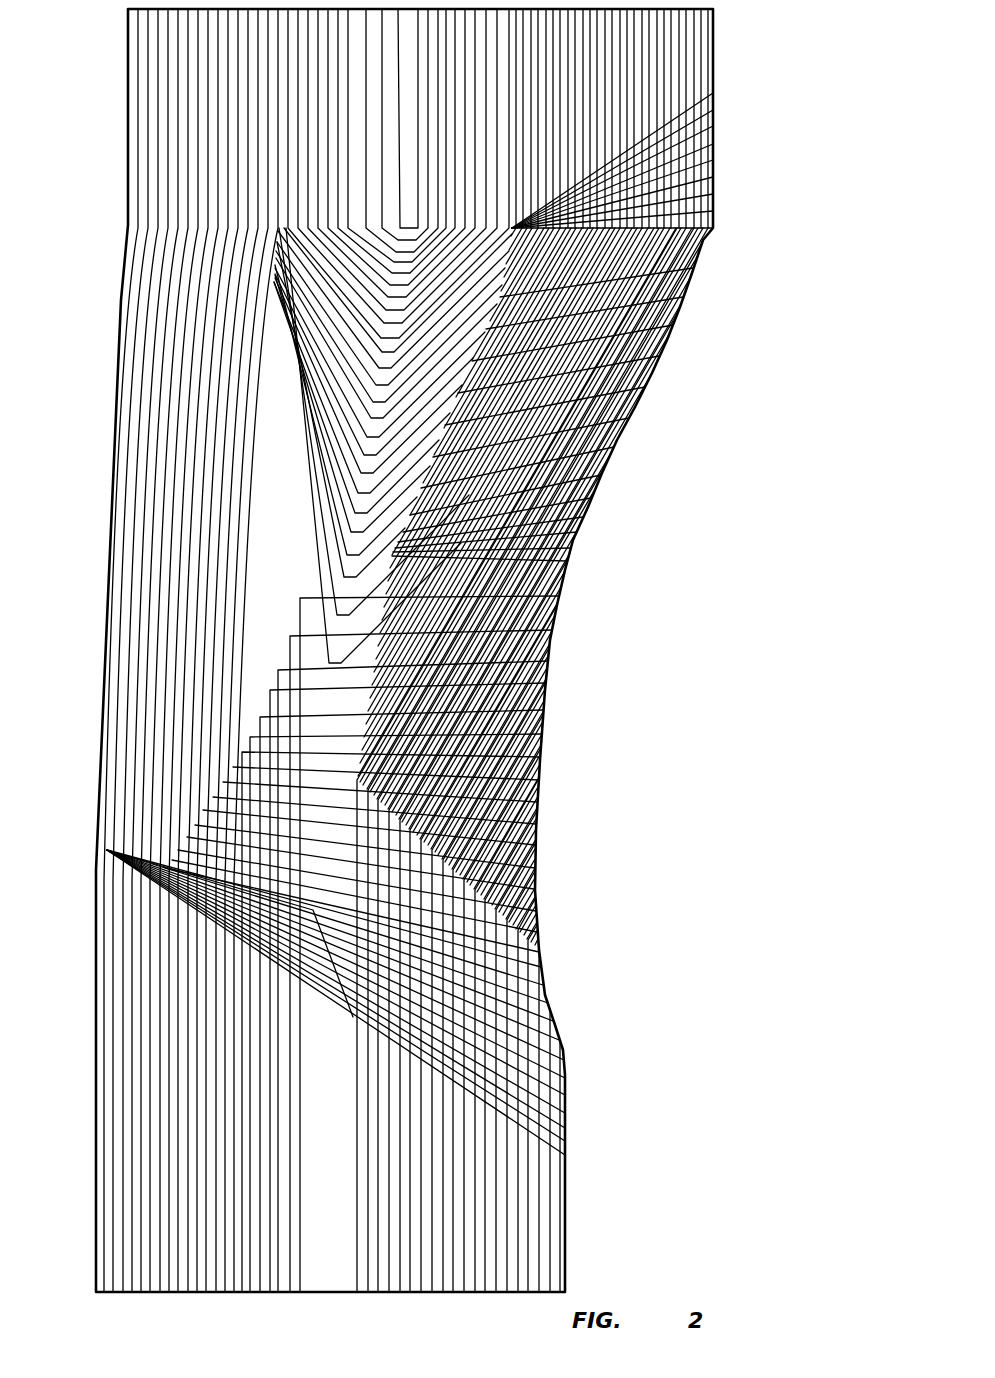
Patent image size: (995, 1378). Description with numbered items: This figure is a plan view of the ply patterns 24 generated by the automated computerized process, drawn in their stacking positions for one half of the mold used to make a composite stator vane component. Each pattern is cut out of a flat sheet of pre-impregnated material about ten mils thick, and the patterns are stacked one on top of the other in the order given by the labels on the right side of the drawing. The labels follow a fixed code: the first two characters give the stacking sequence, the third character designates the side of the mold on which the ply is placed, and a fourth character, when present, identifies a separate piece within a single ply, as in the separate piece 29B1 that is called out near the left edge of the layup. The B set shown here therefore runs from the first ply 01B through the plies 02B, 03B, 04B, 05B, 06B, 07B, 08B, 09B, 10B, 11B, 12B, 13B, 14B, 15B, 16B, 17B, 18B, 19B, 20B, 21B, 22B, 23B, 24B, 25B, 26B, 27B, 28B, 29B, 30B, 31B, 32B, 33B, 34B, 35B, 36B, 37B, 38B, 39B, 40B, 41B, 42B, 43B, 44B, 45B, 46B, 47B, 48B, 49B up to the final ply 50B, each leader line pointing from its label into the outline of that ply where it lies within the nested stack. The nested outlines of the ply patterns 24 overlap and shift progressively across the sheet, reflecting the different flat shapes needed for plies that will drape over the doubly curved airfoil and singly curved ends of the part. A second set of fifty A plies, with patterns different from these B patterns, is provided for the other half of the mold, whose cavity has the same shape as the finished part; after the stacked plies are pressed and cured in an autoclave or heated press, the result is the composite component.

The ply patterns 24 is at (120, 327).
The separate ply piece 29B1 is at (107, 850).
The ply pattern 01B is at (565, 1155).
The ply pattern 02B is at (565, 1141).
The ply pattern 03B is at (565, 1128).
The ply pattern 04B is at (565, 1113).
The ply pattern 05B is at (565, 1095).
The ply pattern 06B is at (565, 1078).
The ply pattern 07B is at (564, 1060).
The ply pattern 08B is at (559, 1040).
The ply pattern 09B is at (553, 1021).
The ply pattern 10B is at (548, 1003).
The ply pattern 11B is at (543, 985).
The ply pattern 12B is at (541, 967).
The ply pattern 13B is at (539, 952).
The ply pattern 14B is at (537, 932).
The ply pattern 15B is at (536, 911).
The ply pattern 16B is at (534, 889).
The ply pattern 17B is at (535, 868).
The ply pattern 18B is at (535, 845).
The ply pattern 19B is at (536, 824).
The ply pattern 20B is at (537, 802).
The ply pattern 21B is at (539, 780).
The ply pattern 22B is at (540, 757).
The ply pattern 23B is at (541, 734).
The ply pattern 24B is at (543, 710).
The ply pattern 25B is at (546, 683).
The ply pattern 26B is at (548, 661).
The ply pattern 27B is at (552, 630).
The ply pattern 28B is at (559, 596).
The ply pattern 29B is at (567, 561).
The ply pattern 30B is at (571, 548).
The ply pattern 31B is at (577, 532).
The ply pattern 32B is at (583, 517).
The ply pattern 33B is at (591, 498).
The ply pattern 34B is at (601, 475).
The ply pattern 35B is at (614, 447).
The ply pattern 36B is at (629, 418).
The ply pattern 37B is at (645, 387).
The ply pattern 38B is at (659, 356).
The ply pattern 39B is at (673, 325).
The ply pattern 40B is at (683, 297).
The ply pattern 41B is at (693, 268).
The ply pattern 42B is at (713, 228).
The ply pattern 43B is at (713, 211).
The ply pattern 44B is at (713, 194).
The ply pattern 45B is at (713, 177).
The ply pattern 46B is at (713, 160).
The ply pattern 47B is at (713, 144).
The ply pattern 48B is at (713, 126).
The ply pattern 49B is at (713, 110).
The ply pattern 50B is at (713, 93).